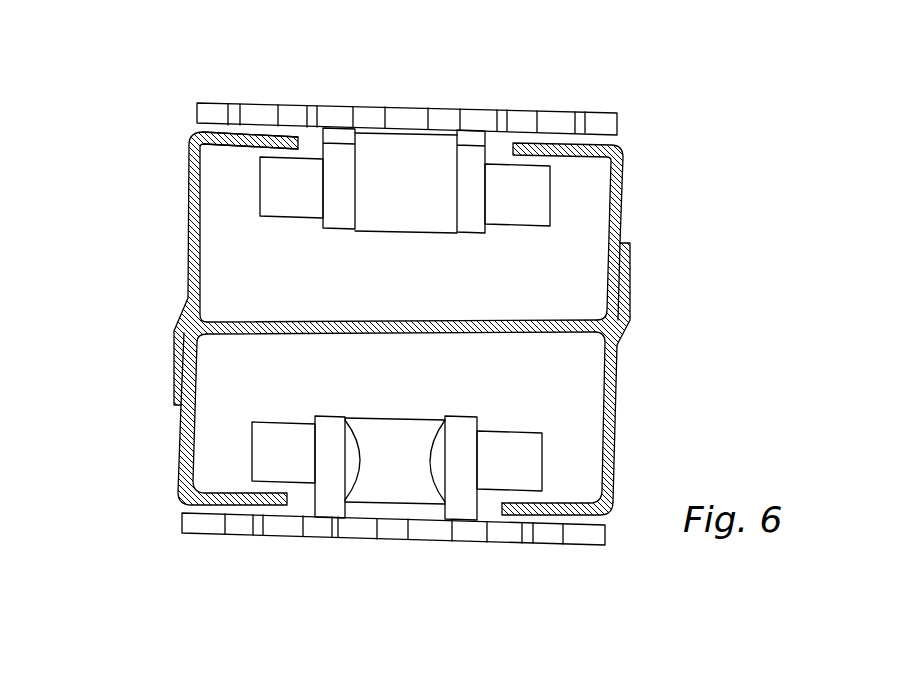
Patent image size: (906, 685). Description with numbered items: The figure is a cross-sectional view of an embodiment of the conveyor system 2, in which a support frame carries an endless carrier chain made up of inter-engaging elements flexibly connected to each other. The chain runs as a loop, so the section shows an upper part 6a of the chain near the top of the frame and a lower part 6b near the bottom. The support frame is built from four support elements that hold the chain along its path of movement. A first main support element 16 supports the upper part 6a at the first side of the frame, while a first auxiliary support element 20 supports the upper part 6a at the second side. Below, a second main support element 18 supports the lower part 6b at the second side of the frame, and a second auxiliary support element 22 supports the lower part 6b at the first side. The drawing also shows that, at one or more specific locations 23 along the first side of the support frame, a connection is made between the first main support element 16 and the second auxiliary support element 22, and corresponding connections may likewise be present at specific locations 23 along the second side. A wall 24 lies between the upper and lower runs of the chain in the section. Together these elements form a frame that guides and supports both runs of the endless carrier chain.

The conveyor system 2 is at (416, 343).
The upper part of the endless carrier chain 6a is at (608, 121).
The lower part of the endless carrier chain 6b is at (427, 530).
The first main support element 16 is at (422, 268).
The second main support element 18 is at (377, 379).
The first auxiliary support element 20 is at (188, 163).
The second auxiliary support element 22 is at (613, 460).
The specific locations 23 is at (145, 297).
The intermediate partition wall 24 is at (517, 318).